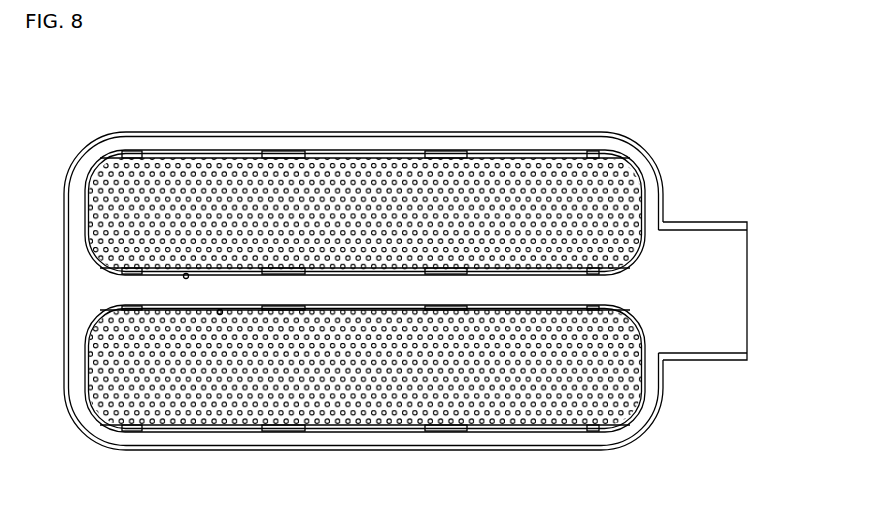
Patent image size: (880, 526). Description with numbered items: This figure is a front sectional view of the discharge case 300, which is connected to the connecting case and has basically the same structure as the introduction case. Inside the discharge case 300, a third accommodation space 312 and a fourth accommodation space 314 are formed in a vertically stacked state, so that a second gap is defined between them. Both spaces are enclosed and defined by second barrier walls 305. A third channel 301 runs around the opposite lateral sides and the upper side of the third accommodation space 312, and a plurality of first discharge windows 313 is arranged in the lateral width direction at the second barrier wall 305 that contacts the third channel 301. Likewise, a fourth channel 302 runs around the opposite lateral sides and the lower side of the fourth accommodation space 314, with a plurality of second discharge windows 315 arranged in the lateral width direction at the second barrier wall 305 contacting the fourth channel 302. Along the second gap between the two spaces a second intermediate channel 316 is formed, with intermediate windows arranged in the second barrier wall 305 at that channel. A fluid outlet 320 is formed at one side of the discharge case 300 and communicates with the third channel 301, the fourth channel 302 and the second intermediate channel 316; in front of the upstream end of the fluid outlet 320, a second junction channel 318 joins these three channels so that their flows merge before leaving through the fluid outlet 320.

The discharge case 300 is at (665, 141).
The third channel 301 is at (192, 145).
The fourth channel 302 is at (567, 447).
The second barrier walls 305 is at (465, 276).
The third accommodation space 312 is at (116, 178).
The first discharge windows 313 is at (517, 155).
The fourth accommodation space 314 is at (125, 397).
The second discharge windows 315 is at (493, 427).
The second intermediate channel 316 is at (160, 290).
The second junction channel 318 is at (645, 284).
The fluid outlet 320 is at (737, 323).